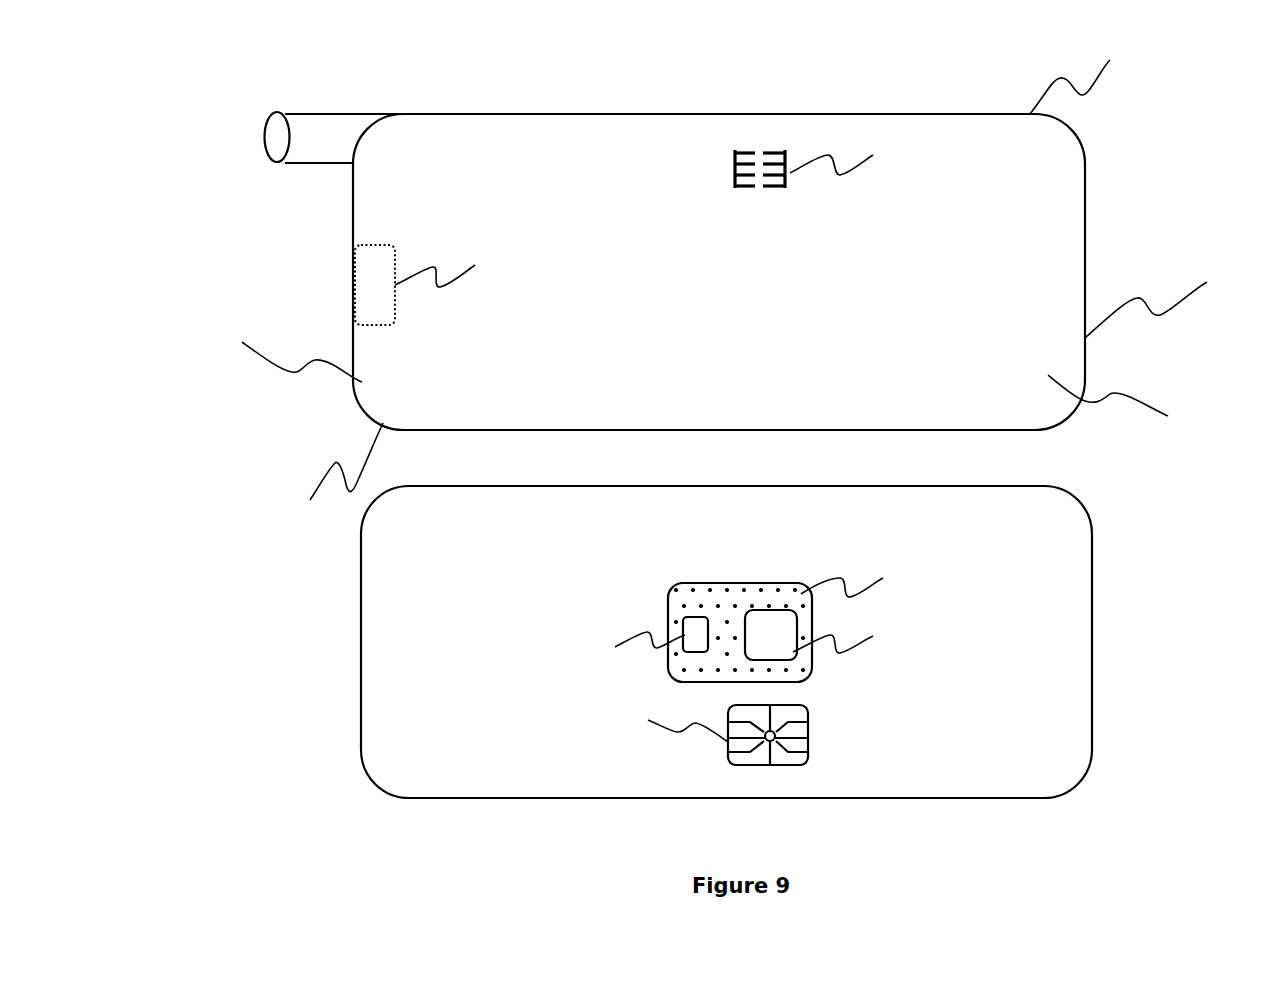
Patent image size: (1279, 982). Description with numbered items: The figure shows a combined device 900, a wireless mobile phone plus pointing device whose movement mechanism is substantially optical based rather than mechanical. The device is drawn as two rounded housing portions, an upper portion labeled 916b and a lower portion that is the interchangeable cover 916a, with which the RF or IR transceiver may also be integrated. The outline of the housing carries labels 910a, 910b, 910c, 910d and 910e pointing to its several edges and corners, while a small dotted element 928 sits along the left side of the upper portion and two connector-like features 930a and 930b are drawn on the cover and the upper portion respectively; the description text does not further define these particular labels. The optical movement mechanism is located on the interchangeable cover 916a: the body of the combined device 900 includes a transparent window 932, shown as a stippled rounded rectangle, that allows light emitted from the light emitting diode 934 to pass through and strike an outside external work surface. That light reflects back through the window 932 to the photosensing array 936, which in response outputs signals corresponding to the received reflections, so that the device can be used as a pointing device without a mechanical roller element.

The combined device 900 is at (96, 434).
The first edge/side of housing 910a is at (1144, 404).
The second side of housing 910b is at (270, 349).
The third side of housing 910c is at (1181, 305).
The fourth side of housing 910d is at (1104, 76).
The fifth side of housing 910e is at (310, 479).
The interchangeable cover 916a is at (518, 558).
The second housing portion 916b is at (538, 187).
The button 928 is at (437, 283).
The smart card contact pad 930a is at (695, 729).
The connector 930b is at (834, 159).
The transparent window 932 is at (804, 627).
The light emitting diode 934 is at (632, 636).
The photosensing array 936 is at (839, 635).